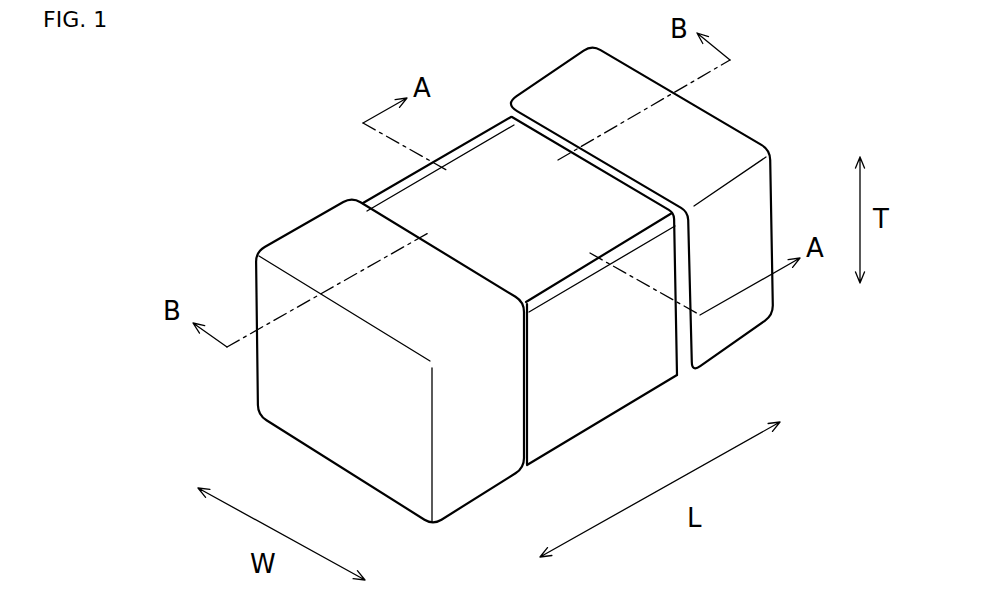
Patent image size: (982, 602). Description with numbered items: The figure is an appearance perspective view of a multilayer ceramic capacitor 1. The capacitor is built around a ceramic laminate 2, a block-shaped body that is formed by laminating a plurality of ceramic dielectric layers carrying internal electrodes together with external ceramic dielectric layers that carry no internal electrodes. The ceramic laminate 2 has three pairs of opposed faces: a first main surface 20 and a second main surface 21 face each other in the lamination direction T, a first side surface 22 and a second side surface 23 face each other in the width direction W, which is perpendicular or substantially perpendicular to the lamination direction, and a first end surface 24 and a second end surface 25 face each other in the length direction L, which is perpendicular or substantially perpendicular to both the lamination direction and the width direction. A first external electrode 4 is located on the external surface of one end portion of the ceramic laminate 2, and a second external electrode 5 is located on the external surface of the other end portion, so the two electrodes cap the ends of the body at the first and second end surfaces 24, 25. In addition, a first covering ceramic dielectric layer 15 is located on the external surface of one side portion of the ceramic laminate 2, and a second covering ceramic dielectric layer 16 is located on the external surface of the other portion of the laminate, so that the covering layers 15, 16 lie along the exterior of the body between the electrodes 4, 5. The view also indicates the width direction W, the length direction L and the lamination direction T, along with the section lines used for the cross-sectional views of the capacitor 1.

The multilayer ceramic capacitor 1 is at (239, 96).
The ceramic laminate 2 is at (373, 187).
The first external electrode 4 is at (282, 363).
The second external electrode 5 is at (713, 113).
The first covering ceramic dielectric layer 15 is at (637, 363).
The second covering ceramic dielectric layer 16 is at (397, 177).
The first main surface 20 is at (528, 147).
The second main surface 21 is at (605, 390).
The first side surface 22 is at (648, 236).
The second side surface 23 is at (467, 147).
The first end surface 24 is at (330, 400).
The second end surface 25 is at (757, 212).